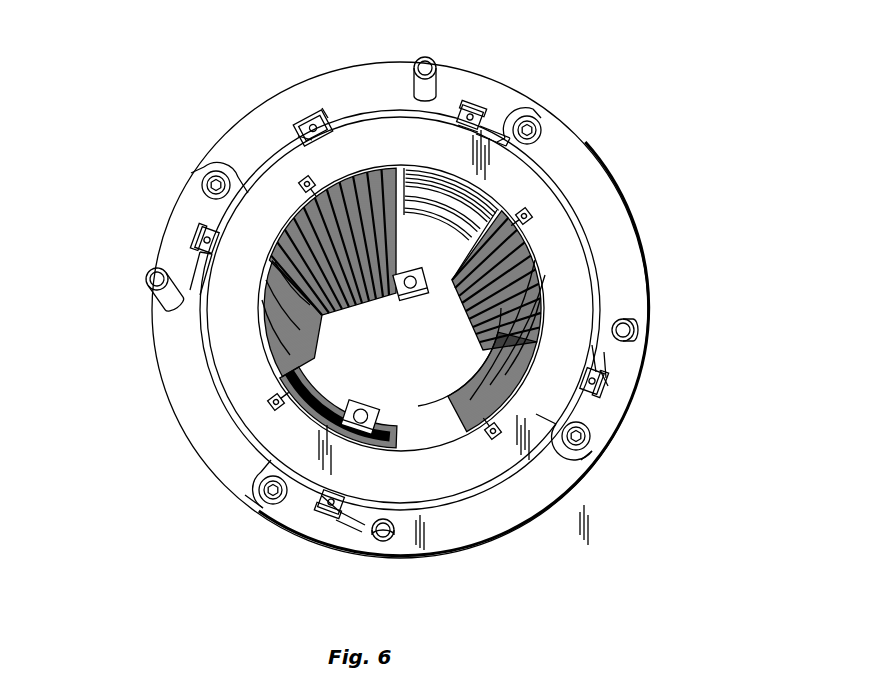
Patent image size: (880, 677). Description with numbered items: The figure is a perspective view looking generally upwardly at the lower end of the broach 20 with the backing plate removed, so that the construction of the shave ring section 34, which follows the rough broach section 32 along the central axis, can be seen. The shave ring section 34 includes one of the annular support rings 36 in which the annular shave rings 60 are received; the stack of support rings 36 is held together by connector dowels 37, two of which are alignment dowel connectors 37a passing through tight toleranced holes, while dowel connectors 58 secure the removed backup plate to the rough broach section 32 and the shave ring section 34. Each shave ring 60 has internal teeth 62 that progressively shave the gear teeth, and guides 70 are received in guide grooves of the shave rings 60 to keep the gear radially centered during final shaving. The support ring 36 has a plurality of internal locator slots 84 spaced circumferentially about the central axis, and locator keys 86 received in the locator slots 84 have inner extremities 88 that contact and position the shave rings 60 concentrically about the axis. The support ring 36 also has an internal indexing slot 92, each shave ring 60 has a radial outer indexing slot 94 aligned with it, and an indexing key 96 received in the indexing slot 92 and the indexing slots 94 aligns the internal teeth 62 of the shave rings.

The broach 20 is at (222, 534).
The rough broach section 32 is at (468, 300).
The shave ring section 34 is at (492, 212).
The support ring 36 is at (620, 236).
The connector dowel 37 is at (543, 127).
The alignment dowel connector 37a is at (205, 182).
The dowel connector 58 is at (426, 56).
The shave ring 60 is at (616, 228).
The internal teeth 62 is at (530, 260).
The guide 70 is at (300, 182).
The locator slot 84 is at (478, 110).
The locator key 86 is at (486, 128).
The inner extremity 88 is at (508, 140).
The internal indexing slot 92 is at (302, 126).
The radial outer indexing slot 94 is at (300, 134).
The indexing key 96 is at (320, 118).